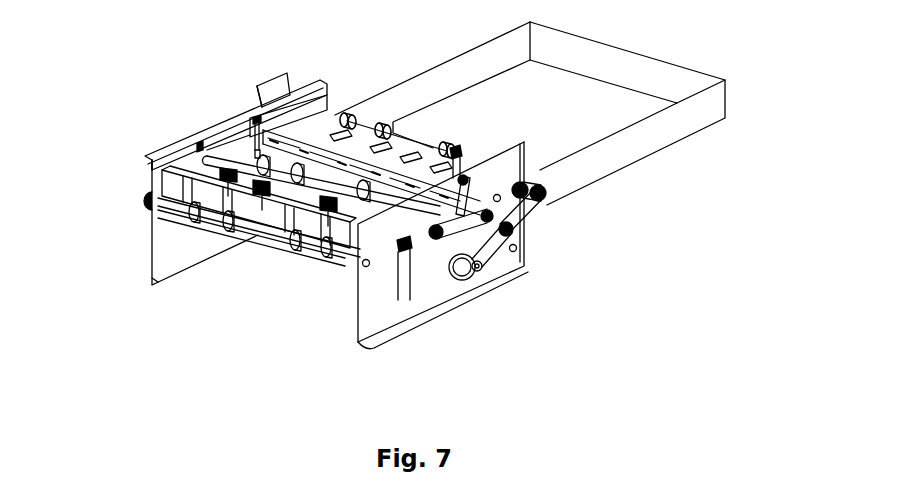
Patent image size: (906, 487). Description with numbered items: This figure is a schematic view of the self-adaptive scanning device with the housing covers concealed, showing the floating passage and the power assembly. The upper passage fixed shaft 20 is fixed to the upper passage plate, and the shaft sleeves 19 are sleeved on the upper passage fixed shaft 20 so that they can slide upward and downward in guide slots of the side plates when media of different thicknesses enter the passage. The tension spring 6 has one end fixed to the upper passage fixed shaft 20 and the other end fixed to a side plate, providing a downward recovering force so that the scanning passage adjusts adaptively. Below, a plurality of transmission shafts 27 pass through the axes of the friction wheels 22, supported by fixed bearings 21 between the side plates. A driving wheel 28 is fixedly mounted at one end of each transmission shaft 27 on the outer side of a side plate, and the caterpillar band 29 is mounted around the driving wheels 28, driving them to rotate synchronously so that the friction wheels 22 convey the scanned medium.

The tension spring 6 is at (413, 247).
The shaft sleeves 19 is at (406, 250).
The upper passage fixed shaft 20 is at (322, 262).
The fixed bearings 21 is at (257, 238).
The friction wheels 22 is at (185, 226).
The transmission shaft 27 is at (545, 206).
The driving wheel 28 is at (528, 182).
The caterpillar band 29 is at (492, 250).